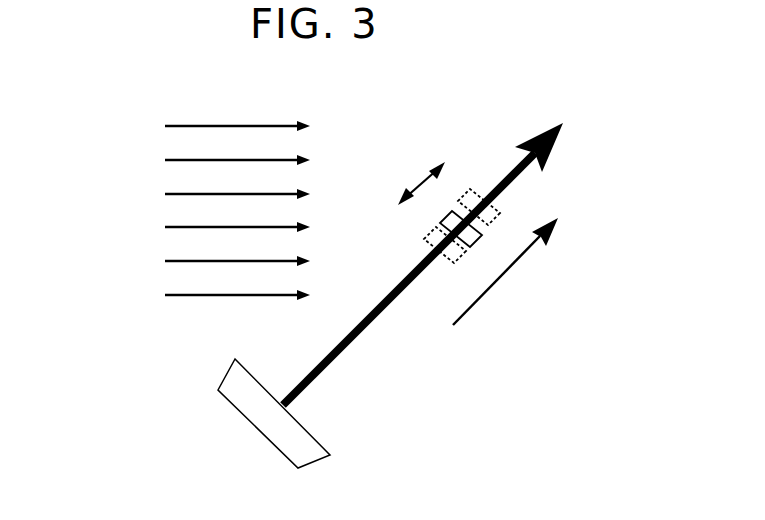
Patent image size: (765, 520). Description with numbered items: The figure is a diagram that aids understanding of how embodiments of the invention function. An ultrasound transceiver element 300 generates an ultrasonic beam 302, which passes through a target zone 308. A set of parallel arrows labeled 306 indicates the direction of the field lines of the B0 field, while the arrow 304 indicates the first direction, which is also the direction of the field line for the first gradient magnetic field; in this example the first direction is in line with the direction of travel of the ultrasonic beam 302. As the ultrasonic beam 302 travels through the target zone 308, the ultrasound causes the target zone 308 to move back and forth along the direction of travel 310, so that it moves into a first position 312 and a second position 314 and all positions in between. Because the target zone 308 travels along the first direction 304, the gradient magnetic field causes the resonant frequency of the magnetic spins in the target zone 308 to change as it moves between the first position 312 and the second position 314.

The ultrasound transceiver element 300 is at (318, 463).
The ultrasonic beam 302 is at (352, 345).
The first direction 304 is at (498, 283).
The direction of field lines of the B0 field 306 is at (137, 113).
The target zone 308 is at (478, 247).
The direction of travel 310 is at (422, 173).
The first position 312 is at (500, 213).
The second position 314 is at (450, 262).